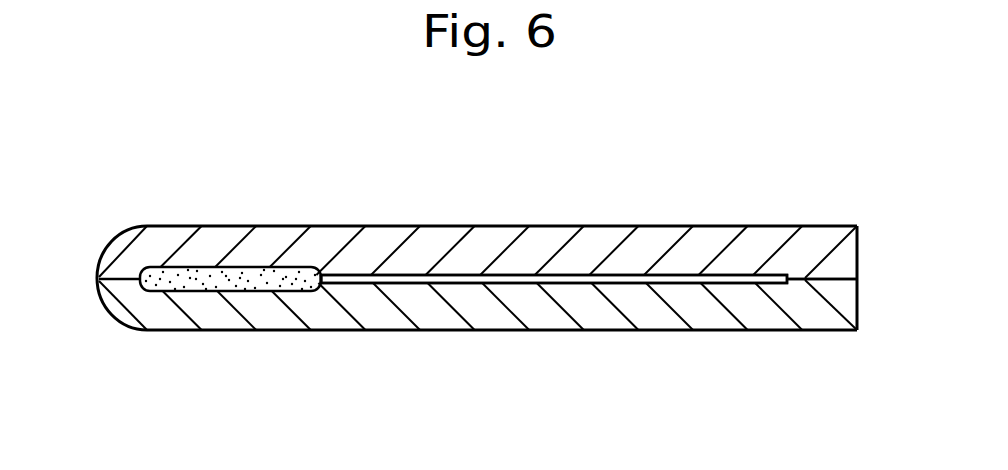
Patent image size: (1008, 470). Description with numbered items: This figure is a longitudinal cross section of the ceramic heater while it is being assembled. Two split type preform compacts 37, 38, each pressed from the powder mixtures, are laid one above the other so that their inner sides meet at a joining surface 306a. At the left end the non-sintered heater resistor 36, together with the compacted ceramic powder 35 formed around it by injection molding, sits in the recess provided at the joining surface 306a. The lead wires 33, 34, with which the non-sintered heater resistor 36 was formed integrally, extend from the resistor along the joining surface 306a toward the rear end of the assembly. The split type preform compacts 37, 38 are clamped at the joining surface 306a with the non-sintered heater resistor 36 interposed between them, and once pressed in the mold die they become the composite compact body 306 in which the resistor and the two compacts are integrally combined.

The composite compact body 306 is at (357, 338).
The joining surface 306a is at (810, 276).
The compacted ceramic powder 35 is at (235, 276).
The non-sintered heater resistor 36 is at (350, 270).
The split type preform compact 38 is at (479, 256).
The split type preform compact 37 is at (479, 303).
The lead wire 33 is at (578, 275).
The lead wire 34 is at (554, 279).